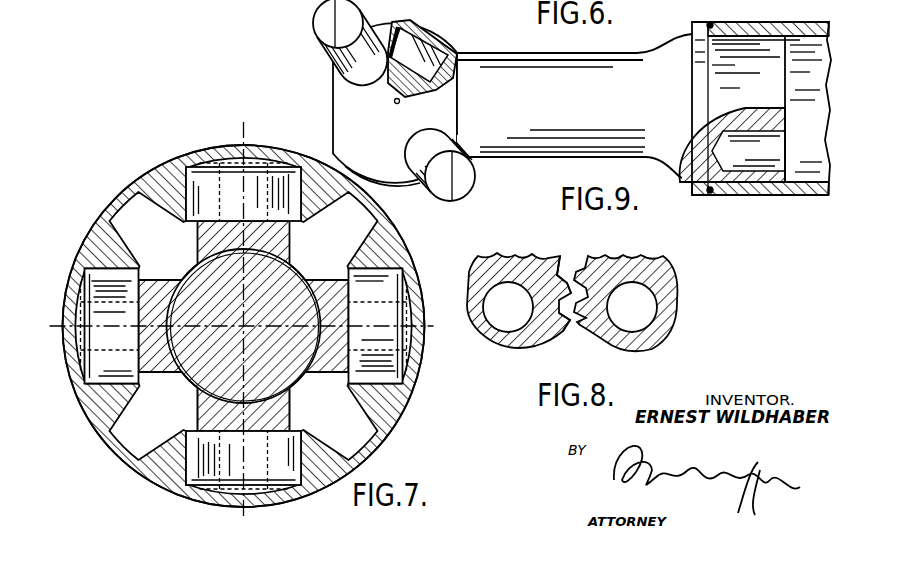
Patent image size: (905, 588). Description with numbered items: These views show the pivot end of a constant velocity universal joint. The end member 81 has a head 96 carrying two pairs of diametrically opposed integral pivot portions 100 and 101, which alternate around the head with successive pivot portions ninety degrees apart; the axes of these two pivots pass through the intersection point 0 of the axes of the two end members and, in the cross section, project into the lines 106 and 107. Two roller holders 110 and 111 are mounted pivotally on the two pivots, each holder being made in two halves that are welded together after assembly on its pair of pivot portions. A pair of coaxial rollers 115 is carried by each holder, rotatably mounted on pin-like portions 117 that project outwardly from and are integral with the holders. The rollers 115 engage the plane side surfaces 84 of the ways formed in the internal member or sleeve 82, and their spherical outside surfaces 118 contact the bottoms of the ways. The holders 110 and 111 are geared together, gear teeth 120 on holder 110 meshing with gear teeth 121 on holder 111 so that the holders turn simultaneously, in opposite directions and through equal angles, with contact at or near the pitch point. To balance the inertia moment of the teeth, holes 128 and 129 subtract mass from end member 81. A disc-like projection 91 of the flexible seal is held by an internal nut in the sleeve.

In FIG. 9, the intersection point O' 0 is at (395, 103).
In FIG. 9, the end member 81 is at (636, 62).
In FIG. 7, the internal member or sleeve 82 is at (244, 326).
In FIG. 9, the internal member or sleeve 82 is at (393, 23).
In FIG. 7, the side surfaces of the ways 84 is at (249, 308).
In FIG. 9, the disc-like projection of the flexible seal 91 is at (692, 24).
In FIG. 7, the head of the end member 96 is at (244, 326).
In FIG. 9, the head of the end member 96 is at (400, 174).
In FIG. 9, the pivot portions 100 is at (333, 46).
In FIG. 8, the pivot portions 100 is at (640, 332).
In FIG. 9, the pivot portions 101 is at (470, 168).
In FIG. 8, the pivot portions 101 is at (507, 340).
In FIG. 7, the roller axis 106 is at (245, 327).
In FIG. 7, the roller axis 107 is at (244, 326).
In FIG. 7, the roller holder 110 is at (259, 409).
In FIG. 8, the roller holder 110 is at (633, 268).
In FIG. 7, the roller holder 111 is at (160, 337).
In FIG. 8, the roller holder 111 is at (512, 268).
In FIG. 7, the rollers 115 is at (302, 326).
In FIG. 7, the pin-like portions 117 is at (244, 326).
In FIG. 7, the spherical outside surfaces 118 is at (258, 326).
In FIG. 8, the gear teeth 120 is at (572, 335).
In FIG. 8, the gear teeth 121 is at (563, 278).
In FIG. 9, the hole 128 is at (432, 56).
In FIG. 9, the hole 129 is at (782, 146).